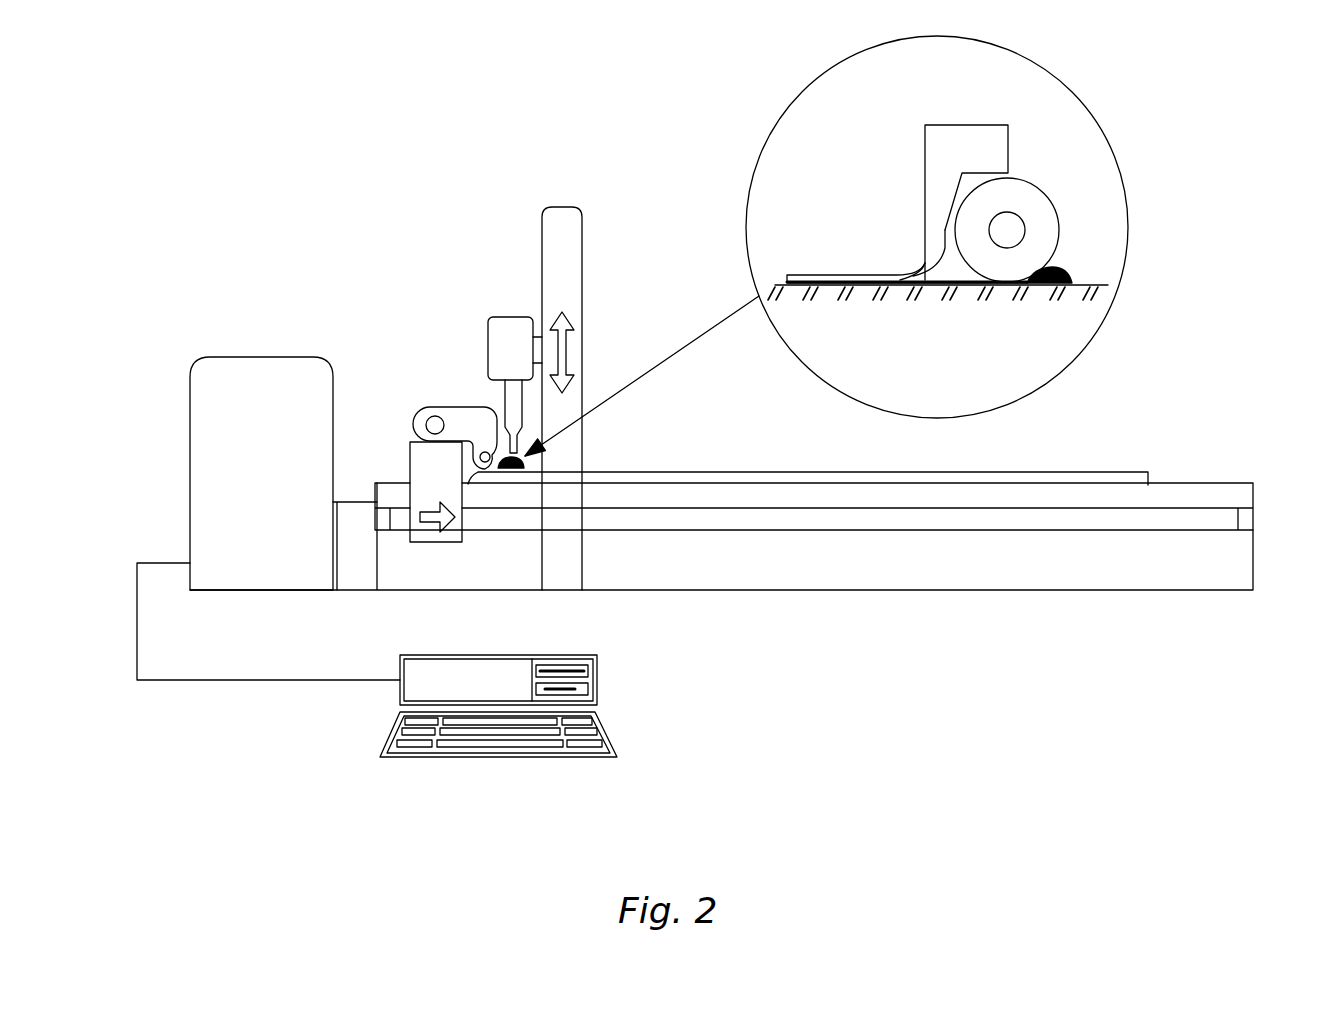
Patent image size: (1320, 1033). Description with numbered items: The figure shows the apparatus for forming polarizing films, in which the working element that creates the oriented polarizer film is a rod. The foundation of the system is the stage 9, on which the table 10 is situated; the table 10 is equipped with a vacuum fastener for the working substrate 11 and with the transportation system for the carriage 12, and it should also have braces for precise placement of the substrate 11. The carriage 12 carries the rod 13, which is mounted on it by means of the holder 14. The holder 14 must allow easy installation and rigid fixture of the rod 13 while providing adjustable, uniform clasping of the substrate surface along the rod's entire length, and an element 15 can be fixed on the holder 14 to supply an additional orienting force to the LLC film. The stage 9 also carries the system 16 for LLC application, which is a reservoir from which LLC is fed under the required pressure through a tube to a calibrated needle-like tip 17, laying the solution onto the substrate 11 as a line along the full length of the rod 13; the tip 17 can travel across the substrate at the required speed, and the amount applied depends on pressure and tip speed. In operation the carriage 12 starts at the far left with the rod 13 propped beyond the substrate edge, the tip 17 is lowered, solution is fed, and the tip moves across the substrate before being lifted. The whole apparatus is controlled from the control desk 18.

The stage 9 is at (1050, 560).
The table 10 is at (1173, 500).
The substrate 11 is at (1050, 480).
The carriage 12 is at (425, 467).
The rod 13 is at (1038, 235).
The holder 14 is at (467, 428).
The element 15 is at (830, 277).
The system for LLC application 16 is at (512, 347).
The needle-like tip 17 is at (512, 447).
The control desk 18 is at (524, 706).